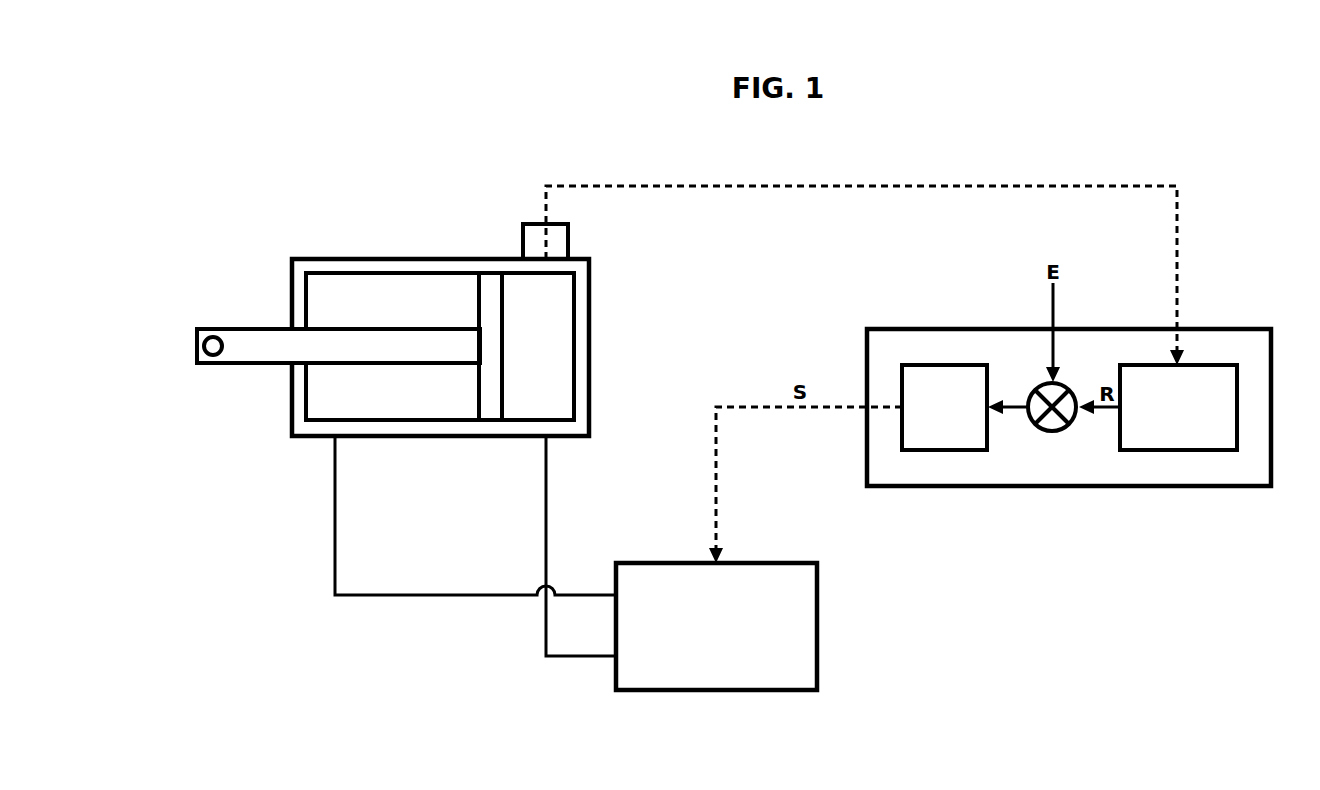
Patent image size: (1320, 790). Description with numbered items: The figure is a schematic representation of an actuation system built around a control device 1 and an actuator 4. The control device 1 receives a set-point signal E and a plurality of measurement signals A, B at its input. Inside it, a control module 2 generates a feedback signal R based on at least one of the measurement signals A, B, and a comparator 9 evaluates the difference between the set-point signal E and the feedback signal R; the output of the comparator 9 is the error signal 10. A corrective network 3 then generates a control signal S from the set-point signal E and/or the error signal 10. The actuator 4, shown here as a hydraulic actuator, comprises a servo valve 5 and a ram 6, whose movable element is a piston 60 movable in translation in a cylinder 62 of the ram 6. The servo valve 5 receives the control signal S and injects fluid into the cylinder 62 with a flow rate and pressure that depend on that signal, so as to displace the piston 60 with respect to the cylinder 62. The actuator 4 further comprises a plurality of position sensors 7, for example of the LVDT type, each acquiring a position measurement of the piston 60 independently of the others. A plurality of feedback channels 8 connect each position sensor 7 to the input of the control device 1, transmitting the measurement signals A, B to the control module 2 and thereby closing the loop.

The control device 1 is at (1048, 466).
The control module 2 is at (1171, 418).
The corrective network 3 is at (938, 418).
The actuator 4 is at (288, 546).
The servo valve 5 is at (709, 630).
The ram 6 is at (441, 250).
The position sensor 7 is at (558, 241).
The feedback channel 8 is at (871, 186).
The comparator 9 is at (1047, 432).
The error signal 10 is at (1012, 403).
The piston 60 is at (490, 345).
The cylinder 62 is at (359, 268).